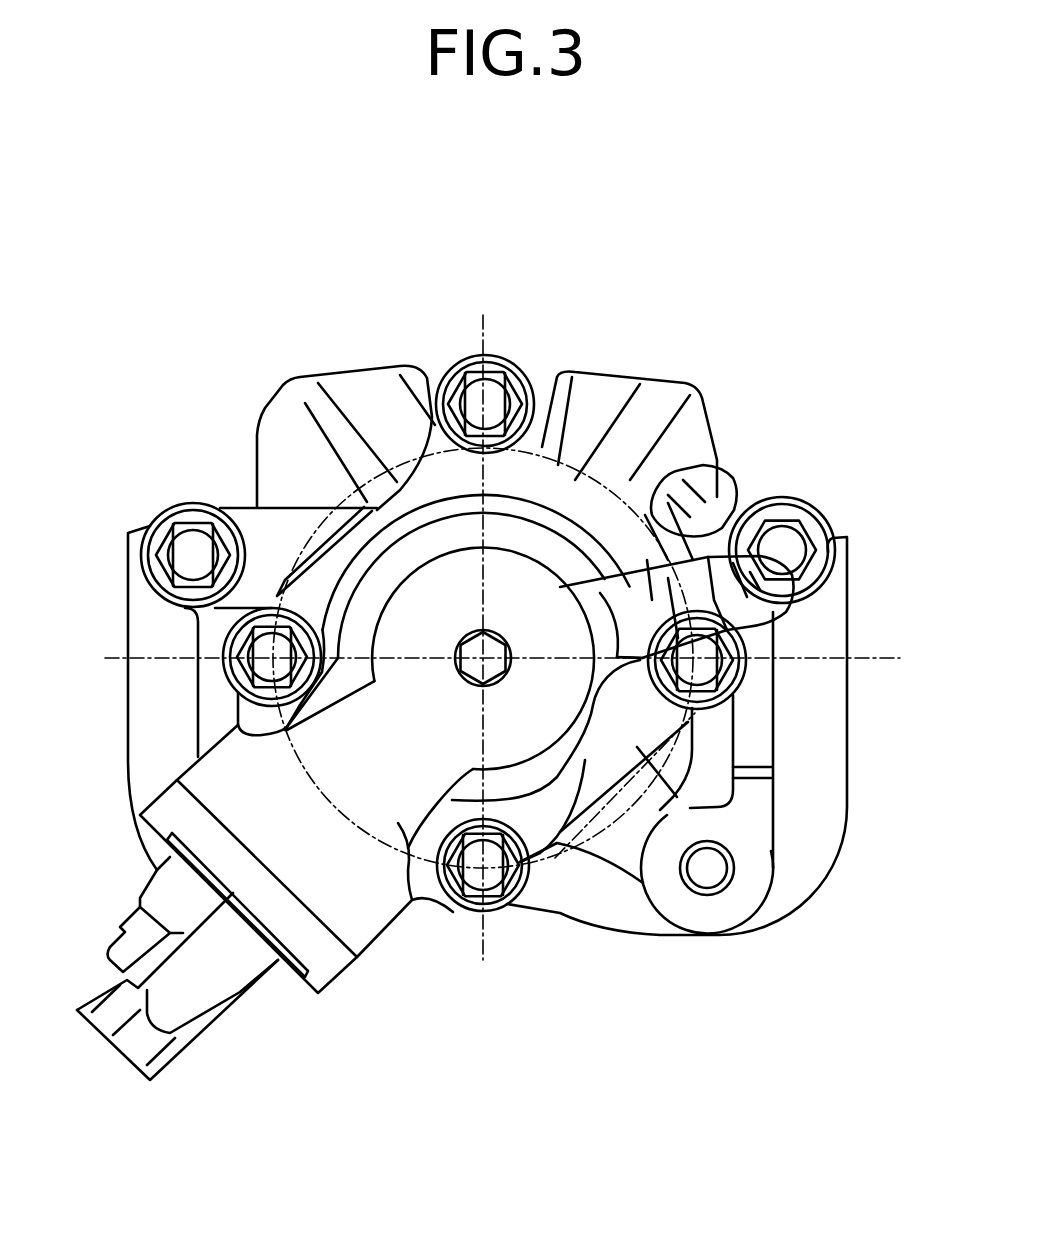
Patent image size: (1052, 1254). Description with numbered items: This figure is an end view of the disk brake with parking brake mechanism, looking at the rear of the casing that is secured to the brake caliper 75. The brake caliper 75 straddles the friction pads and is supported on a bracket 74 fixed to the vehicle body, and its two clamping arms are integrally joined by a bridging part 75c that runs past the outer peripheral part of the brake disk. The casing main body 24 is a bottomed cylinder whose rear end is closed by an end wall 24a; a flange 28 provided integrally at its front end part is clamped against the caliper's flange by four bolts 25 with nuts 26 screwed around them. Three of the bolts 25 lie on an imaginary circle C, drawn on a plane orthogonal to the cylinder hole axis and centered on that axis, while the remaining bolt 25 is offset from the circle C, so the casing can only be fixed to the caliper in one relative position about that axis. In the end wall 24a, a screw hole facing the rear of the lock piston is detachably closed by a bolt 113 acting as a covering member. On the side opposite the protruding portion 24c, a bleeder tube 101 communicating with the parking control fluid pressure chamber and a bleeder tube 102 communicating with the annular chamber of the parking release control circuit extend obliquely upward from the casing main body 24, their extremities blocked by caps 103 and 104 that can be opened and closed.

The casing main body 24 is at (593, 507).
The end wall 24a is at (540, 727).
The protruding portion 24c is at (412, 900).
The bolt 25 is at (497, 398).
The nut 26 is at (460, 382).
The flange 28 is at (693, 807).
The bracket 74 is at (673, 930).
The brake caliper 75 is at (797, 922).
The bridging part 75c is at (368, 397).
The bleeder tube 101 is at (712, 668).
The bleeder tube 102 is at (705, 507).
The cap 103 is at (778, 560).
The cap 104 is at (757, 575).
The bolt 113 is at (473, 648).
The imaginary circle C is at (292, 478).